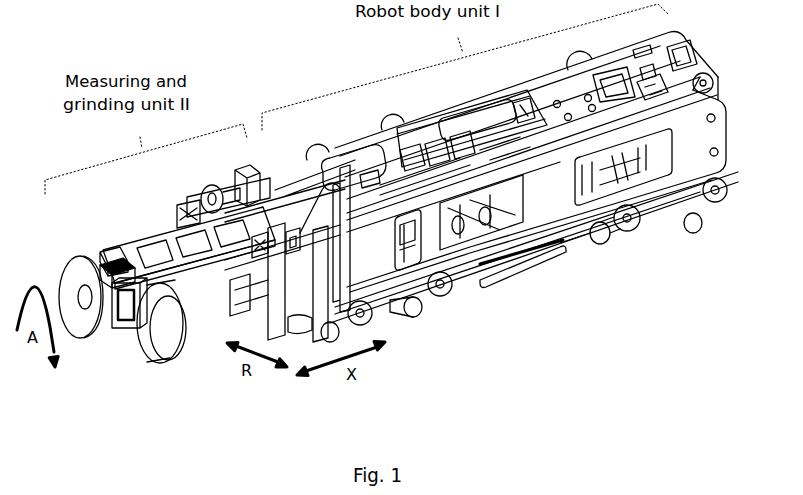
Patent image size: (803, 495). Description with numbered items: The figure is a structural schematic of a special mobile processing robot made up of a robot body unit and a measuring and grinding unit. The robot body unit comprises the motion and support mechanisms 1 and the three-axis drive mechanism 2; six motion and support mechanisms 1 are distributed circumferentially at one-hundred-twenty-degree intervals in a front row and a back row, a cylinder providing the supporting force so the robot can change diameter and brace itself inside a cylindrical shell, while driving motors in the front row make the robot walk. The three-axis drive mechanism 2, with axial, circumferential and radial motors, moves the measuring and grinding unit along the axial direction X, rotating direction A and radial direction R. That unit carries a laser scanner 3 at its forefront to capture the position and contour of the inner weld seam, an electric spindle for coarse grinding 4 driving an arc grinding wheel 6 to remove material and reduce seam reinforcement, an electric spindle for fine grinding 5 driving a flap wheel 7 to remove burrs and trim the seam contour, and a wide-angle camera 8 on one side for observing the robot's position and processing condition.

The motion and support mechanisms 1 is at (641, 223).
The three-axis drive mechanism 2 is at (412, 228).
The laser scanner 3 is at (121, 317).
The electric spindle for coarse grinding 4 is at (260, 287).
The electric spindle for fine grinding 5 is at (112, 268).
The arc grinding wheel 6 is at (168, 327).
The flap wheel 7 is at (82, 313).
The wide-angle camera 8 is at (213, 197).